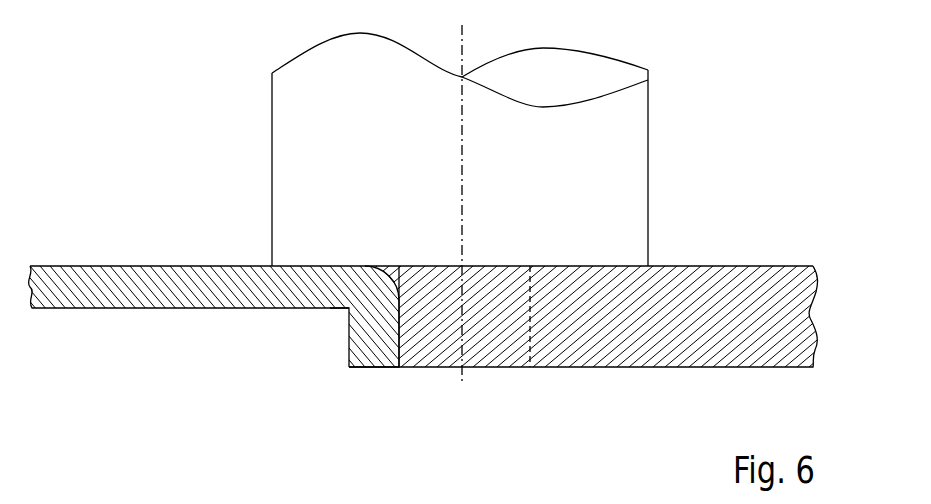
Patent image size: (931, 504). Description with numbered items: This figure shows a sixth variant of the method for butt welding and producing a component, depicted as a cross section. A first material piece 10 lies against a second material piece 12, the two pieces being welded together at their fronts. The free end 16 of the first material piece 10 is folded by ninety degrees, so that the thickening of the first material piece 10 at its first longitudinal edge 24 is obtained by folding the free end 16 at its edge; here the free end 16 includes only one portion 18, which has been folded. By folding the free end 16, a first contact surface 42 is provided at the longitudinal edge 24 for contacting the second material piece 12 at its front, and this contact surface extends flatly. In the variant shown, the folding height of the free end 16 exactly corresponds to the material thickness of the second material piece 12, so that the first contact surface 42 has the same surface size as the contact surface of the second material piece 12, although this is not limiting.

The first material piece 10 is at (57, 288).
The second material piece 12 is at (583, 350).
The free end 16 is at (306, 338).
The first portion 18 is at (372, 358).
The longitudinal edge 24 is at (397, 243).
The first contact surface 42 is at (412, 349).